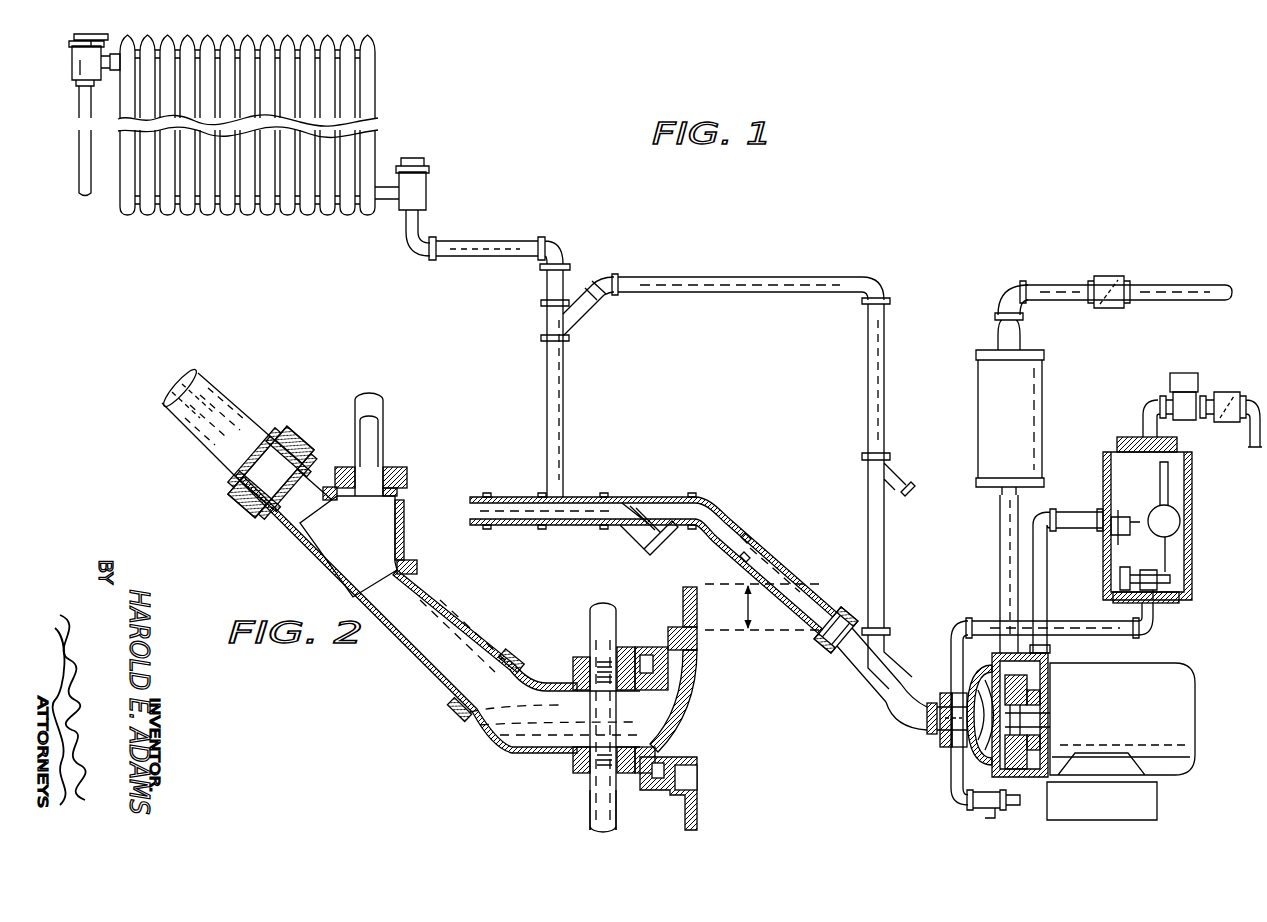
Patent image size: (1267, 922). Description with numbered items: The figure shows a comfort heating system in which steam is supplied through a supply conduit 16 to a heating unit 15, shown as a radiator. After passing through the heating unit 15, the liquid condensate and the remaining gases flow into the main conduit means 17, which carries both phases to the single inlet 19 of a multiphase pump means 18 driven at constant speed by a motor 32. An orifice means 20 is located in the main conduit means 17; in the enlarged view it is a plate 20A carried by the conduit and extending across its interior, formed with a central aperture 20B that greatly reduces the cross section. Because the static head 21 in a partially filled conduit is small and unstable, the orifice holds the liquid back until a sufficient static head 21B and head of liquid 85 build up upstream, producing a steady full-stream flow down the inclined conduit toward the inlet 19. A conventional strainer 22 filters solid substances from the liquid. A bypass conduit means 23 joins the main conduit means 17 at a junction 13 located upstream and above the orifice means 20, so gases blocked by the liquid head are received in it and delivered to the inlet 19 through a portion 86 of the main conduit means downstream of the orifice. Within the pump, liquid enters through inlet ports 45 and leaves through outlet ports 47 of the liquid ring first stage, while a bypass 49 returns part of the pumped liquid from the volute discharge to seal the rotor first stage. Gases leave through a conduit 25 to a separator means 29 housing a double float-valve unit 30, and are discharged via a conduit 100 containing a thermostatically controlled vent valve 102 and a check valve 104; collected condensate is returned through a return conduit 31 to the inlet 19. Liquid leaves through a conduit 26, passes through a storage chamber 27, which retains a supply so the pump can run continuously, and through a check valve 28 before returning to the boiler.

In FIG. 1, the junction 13 is at (575, 320).
In FIG. 1, the heating unit 15 is at (384, 109).
In FIG. 1, the supply conduit 16 is at (78, 132).
In FIG. 1, the main conduit means 17 is at (545, 404).
In FIG. 2, the main conduit means 17 is at (234, 394).
In FIG. 1, the pump means 18 is at (935, 757).
In FIG. 2, the pump means 18 is at (662, 795).
In FIG. 1, the inlet 19 is at (984, 692).
In FIG. 2, the inlet 19 is at (668, 714).
In FIG. 1, the orifice means 20 is at (836, 664).
In FIG. 2, the orifice means 20 is at (248, 526).
In FIG. 2, the plate 20A is at (278, 428).
In FIG. 2, the central aperture 20B is at (222, 466).
In FIG. 1, the static head 21 is at (500, 530).
In FIG. 2, the static head on upstream side 21B is at (178, 414).
In FIG. 1, the strainer 22 is at (640, 549).
In FIG. 1, the bypass conduit means 23 is at (885, 396).
In FIG. 2, the bypass conduit means 23 is at (376, 397).
In FIG. 1, the conduit 25 is at (1046, 595).
In FIG. 1, the conduit 26 is at (1000, 516).
In FIG. 1, the storage chamber 27 is at (985, 452).
In FIG. 1, the check valve 28 is at (1112, 312).
In FIG. 1, the separator means 29 is at (1195, 493).
In FIG. 1, the double float-valve unit 30 is at (1178, 545).
In FIG. 1, the return conduit 31 is at (1095, 633).
In FIG. 2, the return conduit 31 is at (592, 636).
In FIG. 1, the motor 32 is at (1122, 727).
In FIG. 2, the inlet ports 45 is at (697, 772).
In FIG. 2, the outlet ports 47 is at (692, 690).
In FIG. 1, the bypass 49 is at (965, 803).
In FIG. 2, the bypass 49 is at (590, 800).
In FIG. 2, the head of liquid 85 is at (742, 606).
In FIG. 1, the portion of main conduit means 86 is at (886, 716).
In FIG. 1, the conduit 100 is at (1150, 397).
In FIG. 1, the thermostatically controlled vent valve 102 is at (1181, 373).
In FIG. 1, the check valve 104 is at (1228, 392).